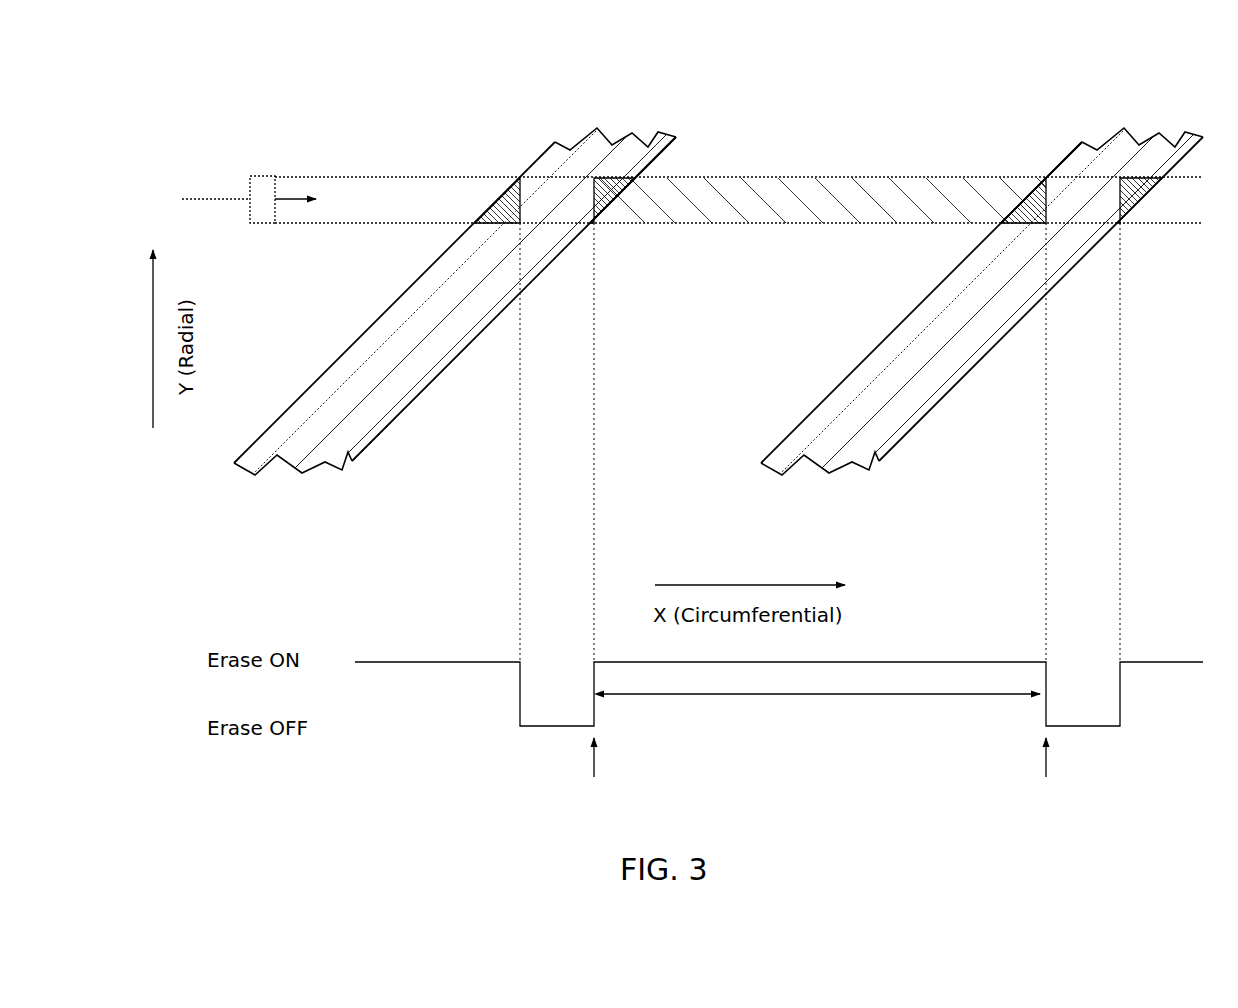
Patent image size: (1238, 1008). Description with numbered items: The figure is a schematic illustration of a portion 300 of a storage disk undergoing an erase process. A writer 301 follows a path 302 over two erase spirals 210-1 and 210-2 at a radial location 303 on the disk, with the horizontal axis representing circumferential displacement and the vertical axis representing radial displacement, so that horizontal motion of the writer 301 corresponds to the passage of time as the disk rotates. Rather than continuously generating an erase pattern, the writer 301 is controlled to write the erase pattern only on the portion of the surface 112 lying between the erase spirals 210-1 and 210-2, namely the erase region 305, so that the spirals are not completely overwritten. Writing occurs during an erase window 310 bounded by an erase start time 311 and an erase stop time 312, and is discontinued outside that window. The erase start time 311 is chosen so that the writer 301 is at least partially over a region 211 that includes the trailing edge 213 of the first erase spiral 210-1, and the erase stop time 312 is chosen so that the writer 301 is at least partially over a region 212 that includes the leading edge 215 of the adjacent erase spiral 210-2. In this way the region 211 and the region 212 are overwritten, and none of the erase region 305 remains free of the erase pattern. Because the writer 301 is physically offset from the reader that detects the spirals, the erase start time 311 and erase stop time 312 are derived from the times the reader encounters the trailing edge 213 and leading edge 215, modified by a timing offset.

The portion of storage disk 300 is at (381, 82).
The writer 301 is at (260, 176).
The path 302 is at (402, 177).
The radial location 303 is at (225, 195).
The erase region 305 is at (838, 210).
The surface 112 is at (717, 385).
The erase spiral 210-1 is at (325, 465).
The erase spiral 210-2 is at (852, 465).
The region 211 is at (593, 200).
The trailing edge 213 is at (655, 160).
The region 212 is at (1047, 200).
The leading edge 215 is at (1085, 138).
The erase window 310 is at (832, 696).
The erase start time 311 is at (595, 773).
The erase stop time 312 is at (1045, 773).